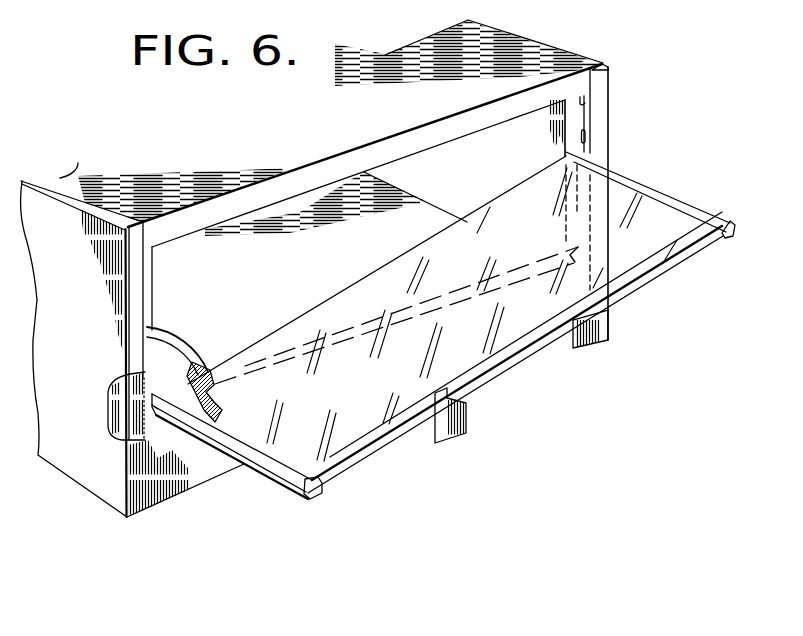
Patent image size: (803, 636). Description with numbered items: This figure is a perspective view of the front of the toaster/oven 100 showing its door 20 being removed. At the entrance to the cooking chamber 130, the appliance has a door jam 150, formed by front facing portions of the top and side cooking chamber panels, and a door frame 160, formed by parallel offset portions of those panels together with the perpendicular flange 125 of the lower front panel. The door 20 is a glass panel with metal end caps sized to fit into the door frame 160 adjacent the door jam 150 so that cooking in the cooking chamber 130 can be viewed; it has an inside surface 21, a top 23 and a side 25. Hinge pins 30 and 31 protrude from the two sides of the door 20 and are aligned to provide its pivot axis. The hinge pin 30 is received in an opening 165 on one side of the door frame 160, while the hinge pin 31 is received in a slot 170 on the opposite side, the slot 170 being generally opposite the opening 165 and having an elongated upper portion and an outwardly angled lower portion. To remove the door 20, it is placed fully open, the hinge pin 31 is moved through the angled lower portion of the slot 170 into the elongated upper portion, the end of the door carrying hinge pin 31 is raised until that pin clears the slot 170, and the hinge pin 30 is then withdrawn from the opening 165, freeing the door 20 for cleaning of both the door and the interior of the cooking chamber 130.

The toaster/oven 100 is at (560, 42).
The door frame 160 is at (587, 101).
The door jam 150 is at (570, 117).
The slot 170 is at (586, 137).
The hinge pin 31 is at (586, 153).
The cooking chamber 130 is at (258, 243).
The perpendicular flange 125 is at (388, 315).
The inside surface 21 is at (371, 384).
The door 20 is at (410, 436).
The top 23 is at (343, 463).
The side 25 is at (270, 477).
The hinge pin 30 is at (150, 411).
The opening 165 is at (133, 413).